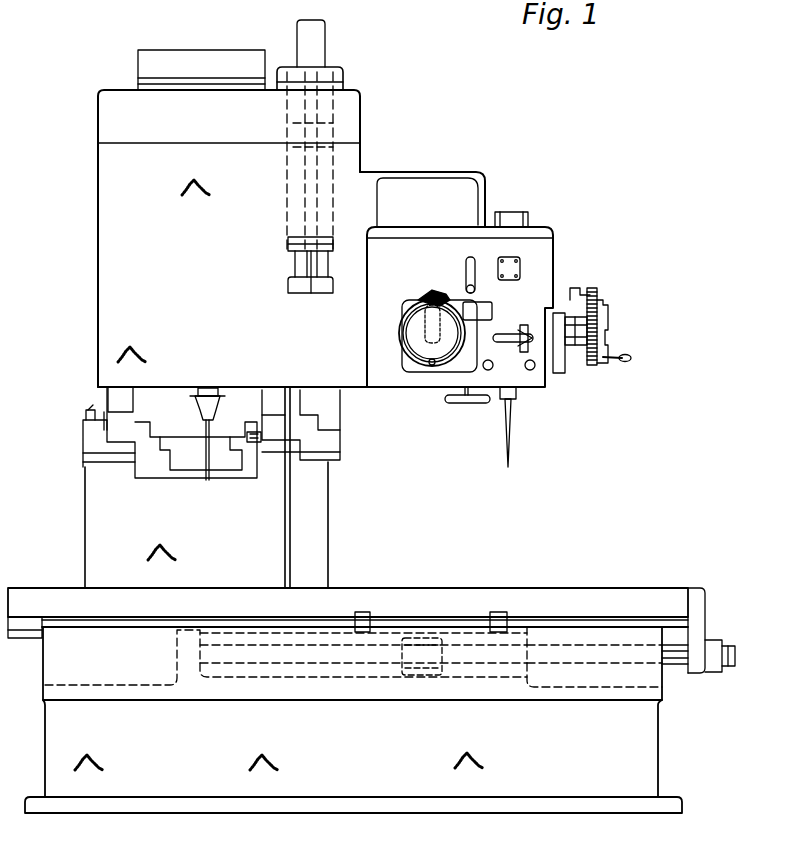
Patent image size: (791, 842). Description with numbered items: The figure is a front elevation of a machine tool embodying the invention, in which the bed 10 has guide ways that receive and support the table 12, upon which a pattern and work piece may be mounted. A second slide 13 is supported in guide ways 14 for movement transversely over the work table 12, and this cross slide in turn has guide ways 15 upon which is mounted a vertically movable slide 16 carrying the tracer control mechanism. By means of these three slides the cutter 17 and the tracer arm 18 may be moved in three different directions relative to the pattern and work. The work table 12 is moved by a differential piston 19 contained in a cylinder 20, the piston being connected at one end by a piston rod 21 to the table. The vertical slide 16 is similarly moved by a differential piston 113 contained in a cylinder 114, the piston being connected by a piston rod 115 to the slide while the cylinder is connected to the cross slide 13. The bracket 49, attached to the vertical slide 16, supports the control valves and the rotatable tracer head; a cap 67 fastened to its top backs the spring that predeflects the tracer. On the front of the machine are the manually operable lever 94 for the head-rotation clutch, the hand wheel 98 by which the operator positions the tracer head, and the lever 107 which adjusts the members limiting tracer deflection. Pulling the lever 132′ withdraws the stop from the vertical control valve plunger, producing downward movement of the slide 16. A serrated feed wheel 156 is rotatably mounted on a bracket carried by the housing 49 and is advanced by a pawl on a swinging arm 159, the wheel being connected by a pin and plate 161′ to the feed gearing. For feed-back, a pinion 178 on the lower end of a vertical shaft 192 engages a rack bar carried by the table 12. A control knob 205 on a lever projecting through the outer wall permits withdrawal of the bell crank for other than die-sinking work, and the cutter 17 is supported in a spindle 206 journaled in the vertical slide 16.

The bed 10 is at (93, 532).
The table 12 is at (18, 600).
The second slide 13 is at (100, 402).
The guide ways 14 is at (83, 446).
The guide ways 15 is at (107, 396).
The vertically movable slide 16 is at (100, 258).
The cutter 17 is at (206, 455).
The tracer arm 18 is at (512, 436).
The piston 19 is at (352, 673).
The cylinder 20 is at (262, 678).
The piston rod 21 is at (592, 658).
The bracket 49 is at (548, 254).
The cap 67 is at (515, 212).
The lever 94 is at (466, 271).
The hand wheel 98 is at (466, 404).
The lever 107 is at (510, 332).
The piston 113 is at (320, 137).
The cylinder 114 is at (345, 107).
The piston rod 115 is at (318, 197).
The lever 132′ is at (535, 368).
The feed wheel 156 is at (598, 302).
The swinging arm 159 is at (580, 290).
The plate 161′ is at (606, 316).
The pinion 178 is at (250, 442).
The vertical shaft 192 is at (320, 470).
The control knob 205 is at (488, 370).
The spindle 206 is at (196, 394).